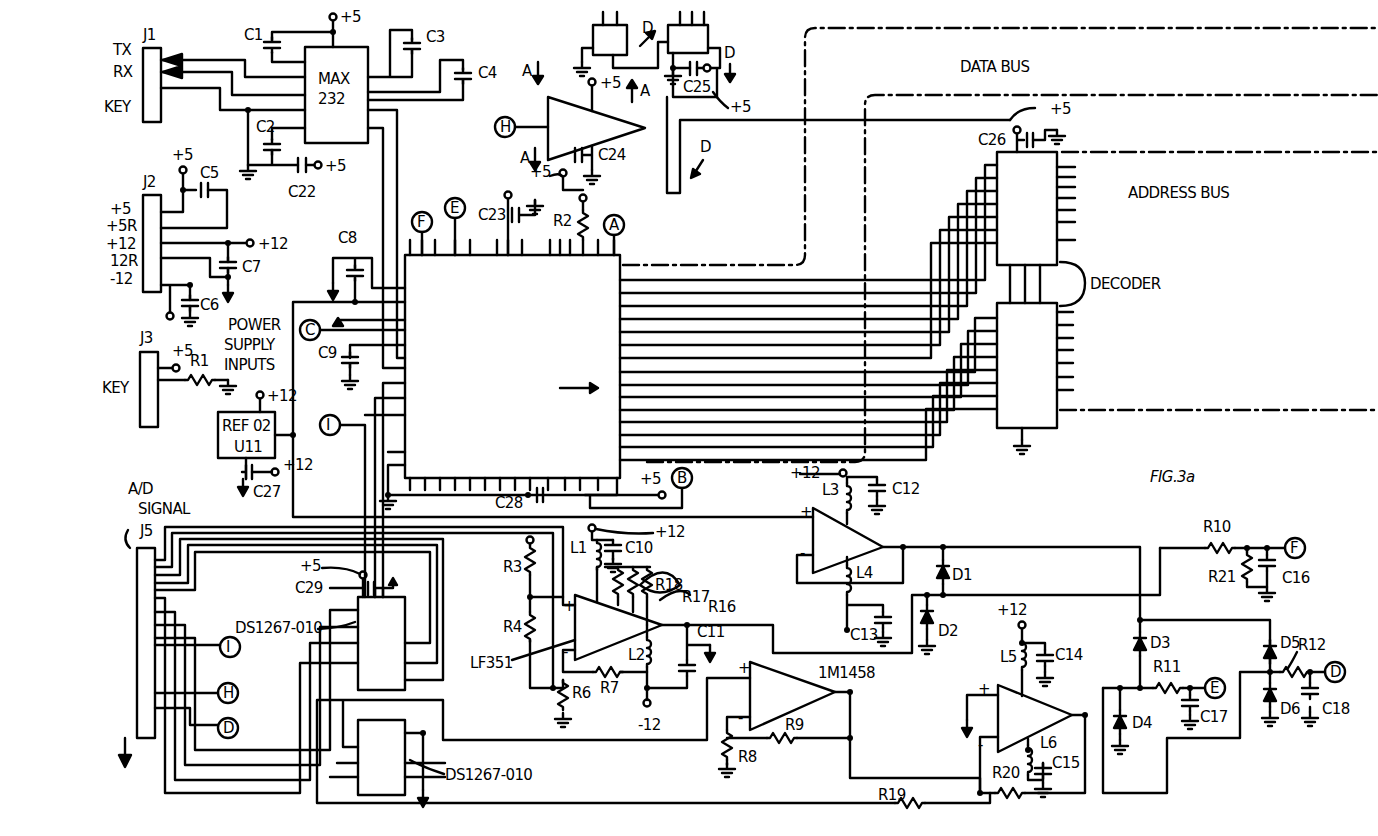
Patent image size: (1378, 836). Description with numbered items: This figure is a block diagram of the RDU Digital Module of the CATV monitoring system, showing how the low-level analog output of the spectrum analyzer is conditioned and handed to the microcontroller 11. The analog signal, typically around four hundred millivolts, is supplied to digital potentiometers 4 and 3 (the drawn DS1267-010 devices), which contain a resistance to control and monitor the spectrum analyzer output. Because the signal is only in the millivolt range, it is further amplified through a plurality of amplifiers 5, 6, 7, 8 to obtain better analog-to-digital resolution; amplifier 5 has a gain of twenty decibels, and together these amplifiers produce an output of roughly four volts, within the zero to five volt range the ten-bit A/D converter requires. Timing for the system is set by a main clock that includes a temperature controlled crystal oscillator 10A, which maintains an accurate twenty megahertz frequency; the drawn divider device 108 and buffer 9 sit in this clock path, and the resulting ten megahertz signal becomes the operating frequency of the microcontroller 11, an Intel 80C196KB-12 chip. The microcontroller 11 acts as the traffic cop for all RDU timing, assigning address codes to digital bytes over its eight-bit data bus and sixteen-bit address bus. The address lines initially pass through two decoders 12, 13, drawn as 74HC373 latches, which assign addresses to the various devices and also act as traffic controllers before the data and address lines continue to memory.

The temperature controlled Xtal oscillator 10A is at (597, 36).
The clock divider U13 108 is at (707, 28).
The buffer U26 HC4050 9 is at (572, 103).
The microcontroller 11 is at (520, 412).
The decoder 12 is at (1036, 210).
The decoder 13 is at (1036, 362).
The digital potentiometer U21 DS1267-010 3 is at (390, 681).
The digital potentiometer 4 is at (389, 745).
The amplifier 5 is at (623, 627).
The amplifier 6 is at (812, 705).
The amplifier 7 is at (862, 551).
The amplifier 8 is at (1045, 712).